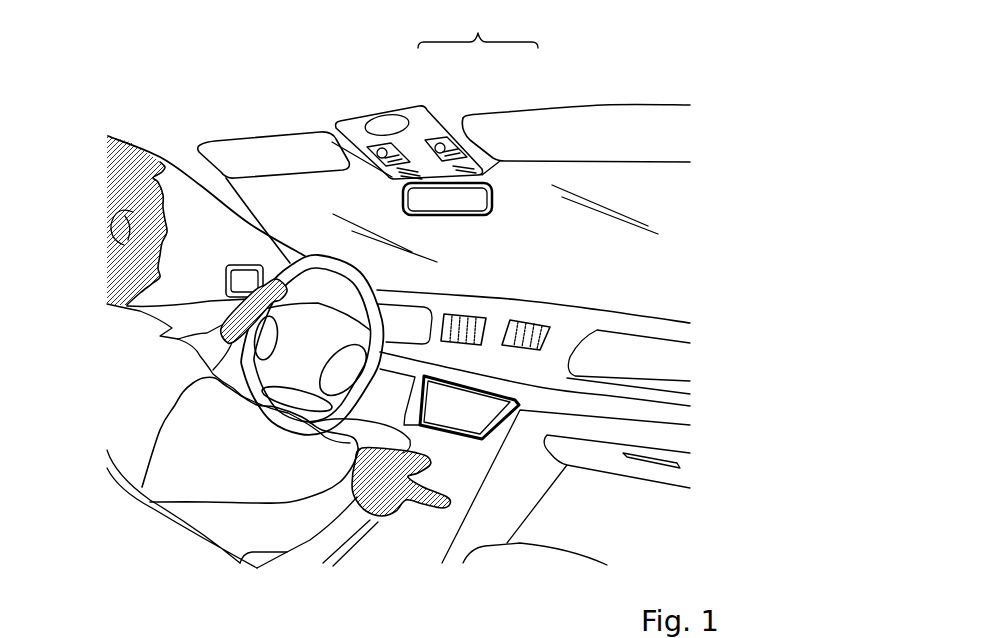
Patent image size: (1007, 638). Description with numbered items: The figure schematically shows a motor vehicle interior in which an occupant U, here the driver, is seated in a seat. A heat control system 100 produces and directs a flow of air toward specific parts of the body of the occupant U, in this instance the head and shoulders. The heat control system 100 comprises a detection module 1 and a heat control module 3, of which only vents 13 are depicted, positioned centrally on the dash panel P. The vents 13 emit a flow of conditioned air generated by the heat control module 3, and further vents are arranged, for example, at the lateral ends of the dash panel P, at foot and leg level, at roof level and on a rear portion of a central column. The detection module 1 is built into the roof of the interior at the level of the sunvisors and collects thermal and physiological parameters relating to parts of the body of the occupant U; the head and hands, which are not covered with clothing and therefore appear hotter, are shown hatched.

The heat control system 100 is at (478, 26).
The detection module 1 is at (373, 85).
The heat control module 3 is at (470, 263).
The vents 13 is at (527, 312).
The dash panel P is at (568, 322).
The occupant U is at (279, 326).